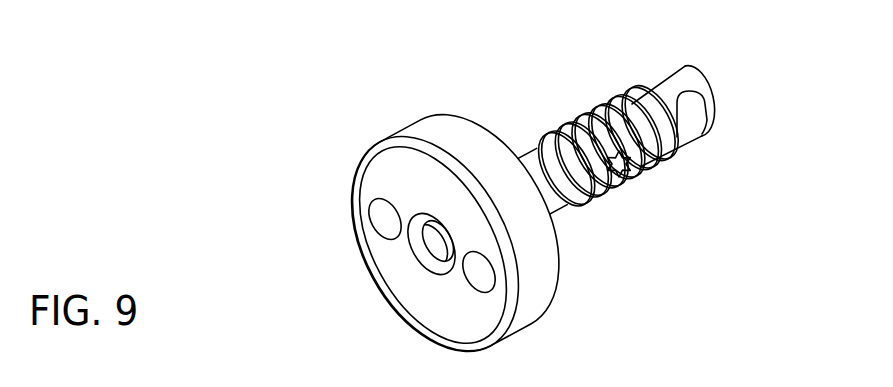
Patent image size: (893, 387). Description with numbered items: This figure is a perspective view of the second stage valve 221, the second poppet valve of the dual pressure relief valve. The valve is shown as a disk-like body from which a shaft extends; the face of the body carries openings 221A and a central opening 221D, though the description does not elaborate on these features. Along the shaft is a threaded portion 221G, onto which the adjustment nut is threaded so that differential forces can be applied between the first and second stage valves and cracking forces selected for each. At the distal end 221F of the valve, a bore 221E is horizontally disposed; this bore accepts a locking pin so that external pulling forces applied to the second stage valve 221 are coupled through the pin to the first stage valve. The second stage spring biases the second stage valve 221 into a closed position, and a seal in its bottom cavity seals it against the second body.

The second stage valve 221 is at (648, 297).
The holes in hub face 221A is at (478, 276).
The central bore 221D is at (436, 248).
The bore 221E is at (778, 169).
The distal end 221F is at (768, 31).
The threaded portion 221G is at (592, 117).